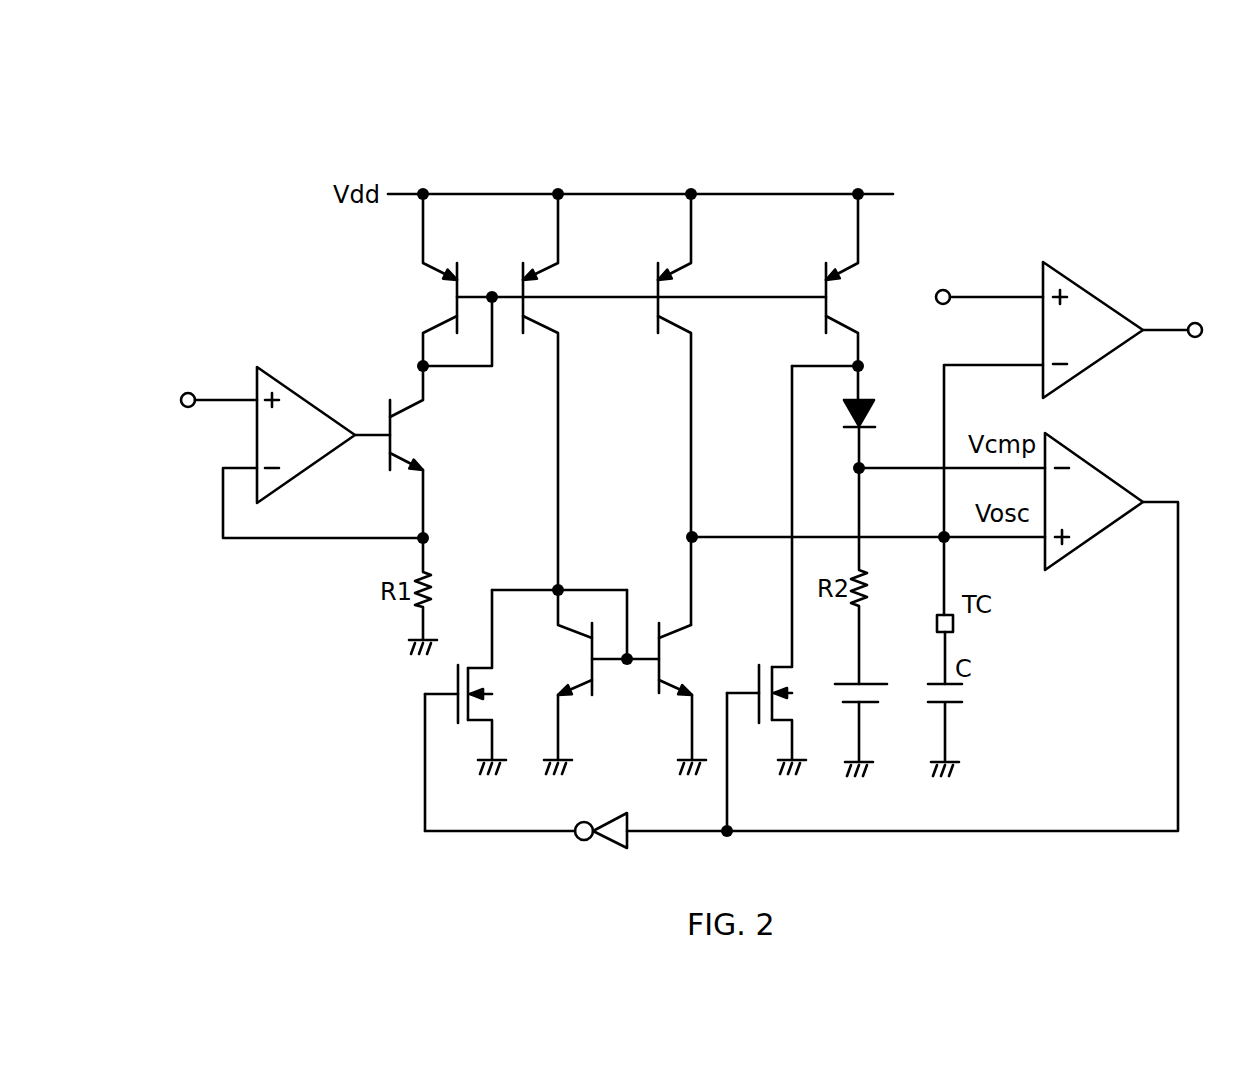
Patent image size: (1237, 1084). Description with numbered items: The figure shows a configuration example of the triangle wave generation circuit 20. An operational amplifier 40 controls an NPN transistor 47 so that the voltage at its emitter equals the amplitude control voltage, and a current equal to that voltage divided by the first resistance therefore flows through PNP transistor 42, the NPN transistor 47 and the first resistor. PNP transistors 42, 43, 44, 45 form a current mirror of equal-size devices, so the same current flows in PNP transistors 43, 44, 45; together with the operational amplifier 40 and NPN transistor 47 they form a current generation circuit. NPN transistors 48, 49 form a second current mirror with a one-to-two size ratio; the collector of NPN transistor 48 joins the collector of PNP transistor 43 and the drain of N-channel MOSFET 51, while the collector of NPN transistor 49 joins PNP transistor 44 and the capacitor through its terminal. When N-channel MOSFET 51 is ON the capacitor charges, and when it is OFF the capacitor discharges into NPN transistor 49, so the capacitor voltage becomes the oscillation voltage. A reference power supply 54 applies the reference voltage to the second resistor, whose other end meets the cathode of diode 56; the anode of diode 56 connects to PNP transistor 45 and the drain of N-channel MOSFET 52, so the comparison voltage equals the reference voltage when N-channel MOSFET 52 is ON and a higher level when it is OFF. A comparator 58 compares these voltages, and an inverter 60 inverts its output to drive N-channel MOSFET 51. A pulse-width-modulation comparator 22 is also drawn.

The triangle wave generation circuit 20 is at (623, 125).
The PWM comparator 22 is at (1075, 282).
The operational amplifier 40 is at (288, 388).
The PNP transistor 42 is at (440, 320).
The PNP transistor 43 is at (547, 268).
The PNP transistor 44 is at (682, 268).
The PNP transistor 45 is at (842, 268).
The NPN transistor 47 is at (405, 412).
The NPN transistor 48 is at (575, 690).
The NPN transistor 49 is at (675, 690).
The N-channel MOSFET 51 is at (475, 722).
The N-channel MOSFET 52 is at (775, 722).
The reference power supply 54 is at (870, 705).
The diode 56 is at (870, 407).
The comparator 58 is at (1093, 465).
The inverter 60 is at (628, 848).